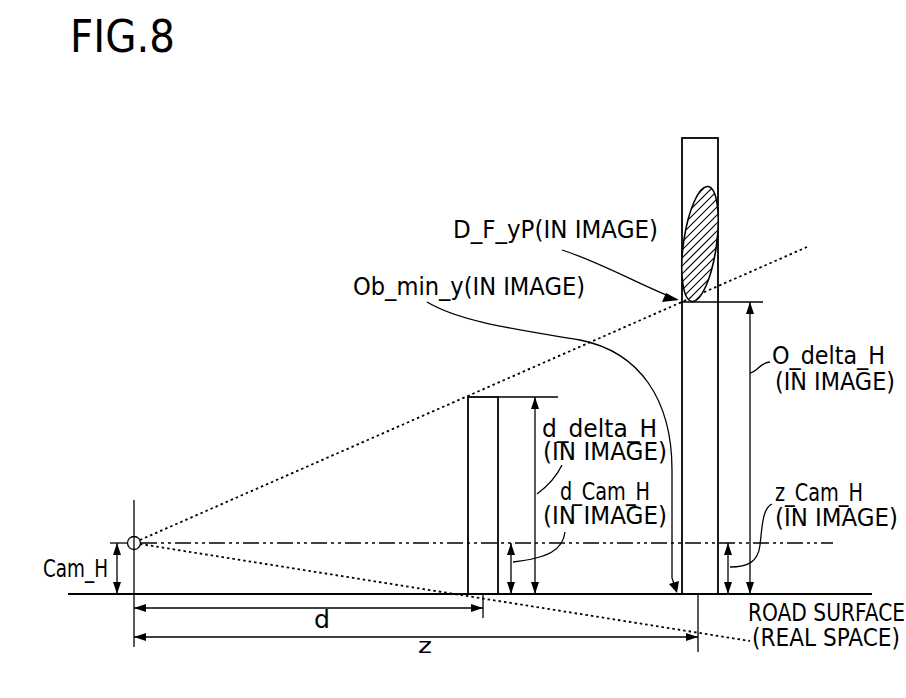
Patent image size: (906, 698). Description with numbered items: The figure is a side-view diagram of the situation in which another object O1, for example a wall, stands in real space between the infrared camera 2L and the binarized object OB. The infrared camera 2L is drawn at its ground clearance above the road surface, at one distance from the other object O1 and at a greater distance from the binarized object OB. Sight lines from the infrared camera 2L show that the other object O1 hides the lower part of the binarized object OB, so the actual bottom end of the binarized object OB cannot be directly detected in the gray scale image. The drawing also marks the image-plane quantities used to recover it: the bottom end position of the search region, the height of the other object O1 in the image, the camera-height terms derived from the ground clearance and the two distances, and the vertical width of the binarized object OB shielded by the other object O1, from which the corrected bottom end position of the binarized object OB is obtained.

The infrared camera 2L is at (128, 540).
The other object O1 is at (468, 397).
The binarized object OB is at (682, 207).